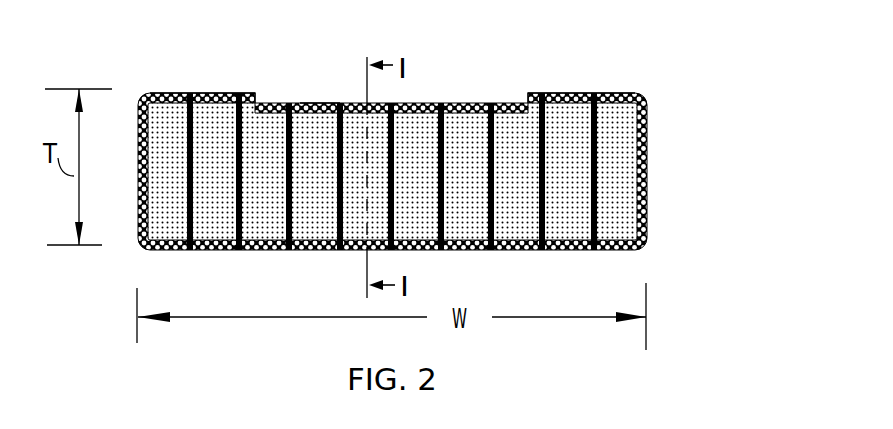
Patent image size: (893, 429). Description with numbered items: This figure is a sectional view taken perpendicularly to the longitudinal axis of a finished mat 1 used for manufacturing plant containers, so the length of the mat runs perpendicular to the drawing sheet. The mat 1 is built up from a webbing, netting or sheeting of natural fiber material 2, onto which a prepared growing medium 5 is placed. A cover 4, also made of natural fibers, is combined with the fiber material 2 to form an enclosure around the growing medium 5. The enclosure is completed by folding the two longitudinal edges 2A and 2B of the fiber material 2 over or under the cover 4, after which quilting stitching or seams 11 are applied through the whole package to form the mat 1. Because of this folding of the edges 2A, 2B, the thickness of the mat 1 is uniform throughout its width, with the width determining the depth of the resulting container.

The mat 1 is at (696, 97).
The natural fiber material 2 is at (520, 250).
The longitudinal edge of the fiber material 2A is at (253, 93).
The longitudinal edge of the fiber material 2B is at (607, 93).
The cover 4 is at (322, 103).
The growing medium 5 is at (213, 215).
The quilting stitching or seams 11 is at (238, 93).